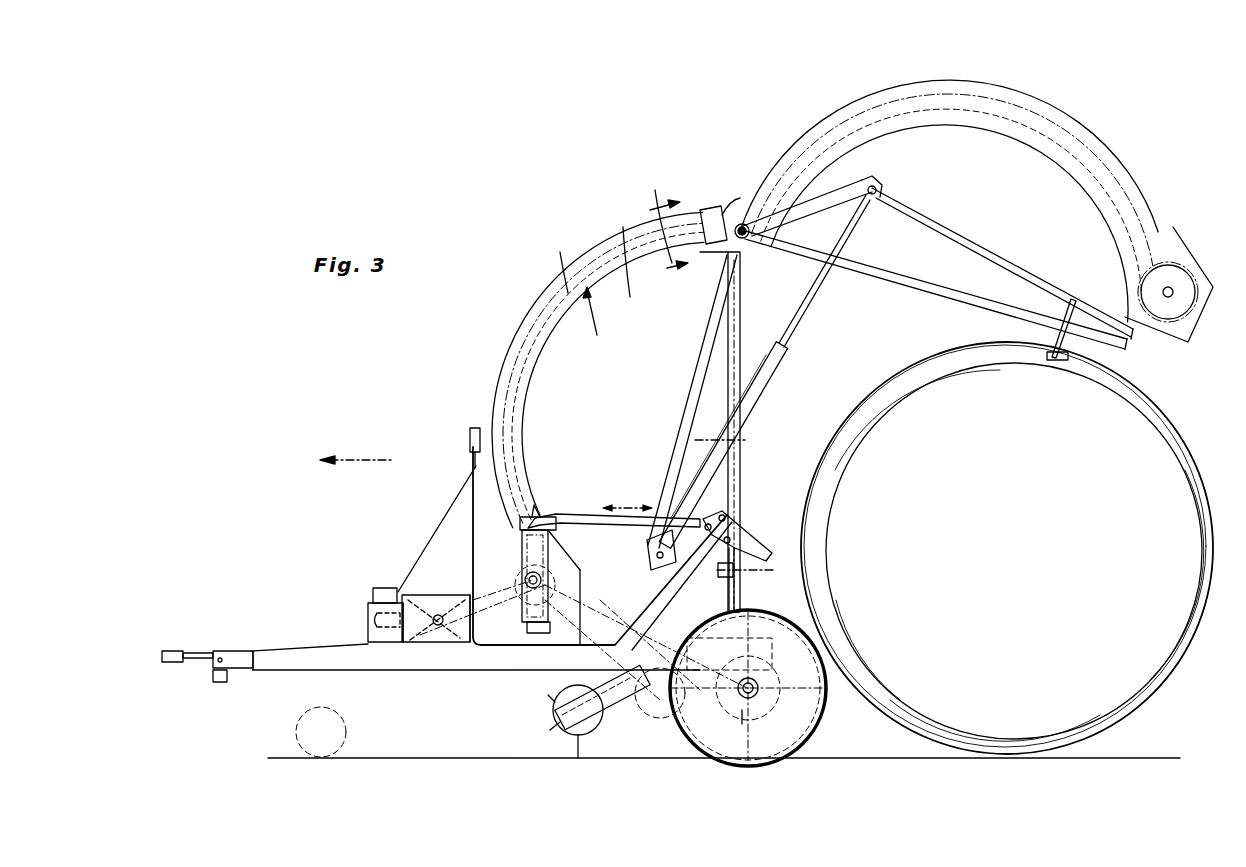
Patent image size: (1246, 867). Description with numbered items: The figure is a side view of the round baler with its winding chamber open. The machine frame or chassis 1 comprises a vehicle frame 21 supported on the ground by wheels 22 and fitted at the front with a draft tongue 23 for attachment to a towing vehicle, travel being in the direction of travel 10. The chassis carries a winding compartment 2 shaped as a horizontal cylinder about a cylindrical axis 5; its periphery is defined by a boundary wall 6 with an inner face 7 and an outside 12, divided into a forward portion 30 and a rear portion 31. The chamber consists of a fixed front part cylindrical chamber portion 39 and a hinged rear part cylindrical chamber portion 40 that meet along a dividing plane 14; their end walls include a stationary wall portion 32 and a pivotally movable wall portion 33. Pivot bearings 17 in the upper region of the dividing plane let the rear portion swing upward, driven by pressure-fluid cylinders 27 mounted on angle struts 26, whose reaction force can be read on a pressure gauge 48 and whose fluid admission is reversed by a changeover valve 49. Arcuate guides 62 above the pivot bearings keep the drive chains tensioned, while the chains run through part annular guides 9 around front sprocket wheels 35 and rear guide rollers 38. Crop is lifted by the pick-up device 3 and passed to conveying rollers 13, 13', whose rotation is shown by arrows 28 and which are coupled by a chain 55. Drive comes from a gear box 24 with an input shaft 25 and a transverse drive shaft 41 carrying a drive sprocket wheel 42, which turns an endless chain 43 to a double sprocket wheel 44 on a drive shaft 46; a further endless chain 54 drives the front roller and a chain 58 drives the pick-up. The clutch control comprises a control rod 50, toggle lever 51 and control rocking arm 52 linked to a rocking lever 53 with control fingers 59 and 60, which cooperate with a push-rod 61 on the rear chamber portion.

The machine frame or chassis 1 is at (812, 753).
The winding compartment 2 is at (583, 550).
The pick-up device 3 is at (533, 714).
The cylindrical axis 5 is at (720, 440).
The boundary wall 6 is at (593, 319).
The inner face 7 is at (513, 412).
The part annular guides 9 is at (808, 132).
The direction of travel 10 is at (356, 448).
The outside of the boundary wall 12 is at (520, 360).
The rear conveying roller 13 is at (750, 688).
The front conveying roller 13' is at (660, 711).
The dividing plane 14 is at (745, 325).
The pivot bearings 17 is at (746, 236).
The vehicle frame 21 is at (530, 668).
The wheels 22 is at (800, 718).
The draft tongue 23 is at (185, 643).
The gear box 24 is at (415, 630).
The input shaft 25 is at (377, 620).
The angle struts 26 is at (692, 366).
The pressure-fluid cylinders 27 is at (756, 418).
The arrows 28 is at (739, 729).
The forward portion of boundary wall 30 is at (559, 259).
The rear portion of boundary wall 31 is at (1085, 160).
The stationary wall portion 32 is at (624, 246).
The pivotally movable wall portion 33 is at (1082, 227).
The front guide and drive rollers or sprocket wheels 35 is at (560, 603).
The rear guide rollers or sprocket wheels 38 is at (1177, 270).
The front part cylindrical chamber portion 39 is at (525, 302).
The rear part cylindrical chamber portion 40 is at (1142, 171).
The transverse drive shaft 41 is at (440, 615).
The drive sprocket wheel 42 is at (428, 630).
The endless chain 43 is at (467, 623).
The double sprocket wheel 44 is at (540, 580).
The drive shaft 46 is at (540, 578).
The pressure gauge 48 is at (470, 437).
The changeover valve 49 is at (385, 588).
The control rod 50 is at (584, 514).
The toggle lever 51 is at (537, 514).
The control rocking arm 52 is at (522, 547).
The rocking lever 53 is at (748, 521).
The further endless chain 54 is at (638, 656).
The chain 55 is at (692, 698).
The chain 58 is at (612, 712).
The forward control finger 59 is at (738, 590).
The rear control finger 60 is at (757, 548).
The push-rod 61 is at (1074, 300).
The arcuate guides 62 is at (712, 210).